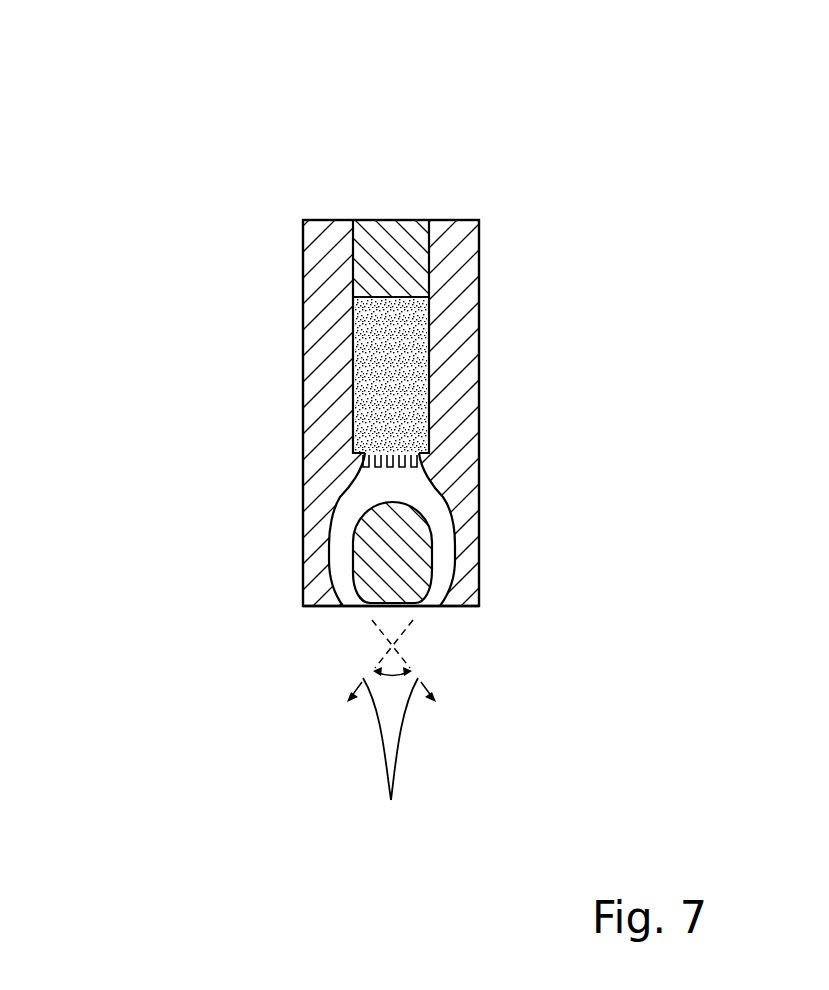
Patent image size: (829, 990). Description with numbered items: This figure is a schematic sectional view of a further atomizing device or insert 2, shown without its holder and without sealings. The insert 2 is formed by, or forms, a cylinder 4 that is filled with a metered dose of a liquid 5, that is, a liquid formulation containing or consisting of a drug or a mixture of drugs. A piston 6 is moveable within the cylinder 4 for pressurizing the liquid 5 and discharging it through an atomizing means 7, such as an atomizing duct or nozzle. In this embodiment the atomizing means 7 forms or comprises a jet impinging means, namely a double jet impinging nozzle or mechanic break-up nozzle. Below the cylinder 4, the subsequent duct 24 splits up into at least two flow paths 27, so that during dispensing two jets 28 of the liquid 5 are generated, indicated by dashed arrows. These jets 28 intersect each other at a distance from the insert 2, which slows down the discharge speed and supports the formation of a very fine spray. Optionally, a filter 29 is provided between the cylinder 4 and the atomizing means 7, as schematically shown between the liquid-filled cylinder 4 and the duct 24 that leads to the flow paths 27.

The insert 2 is at (326, 238).
The piston 6 is at (397, 238).
The cylinder 4 is at (418, 336).
The liquid 5 is at (403, 353).
The filter 29 is at (392, 457).
The duct 24 is at (397, 486).
The flow paths 27 is at (338, 535).
The atomizing means 7 is at (311, 584).
The jets 28 is at (391, 732).